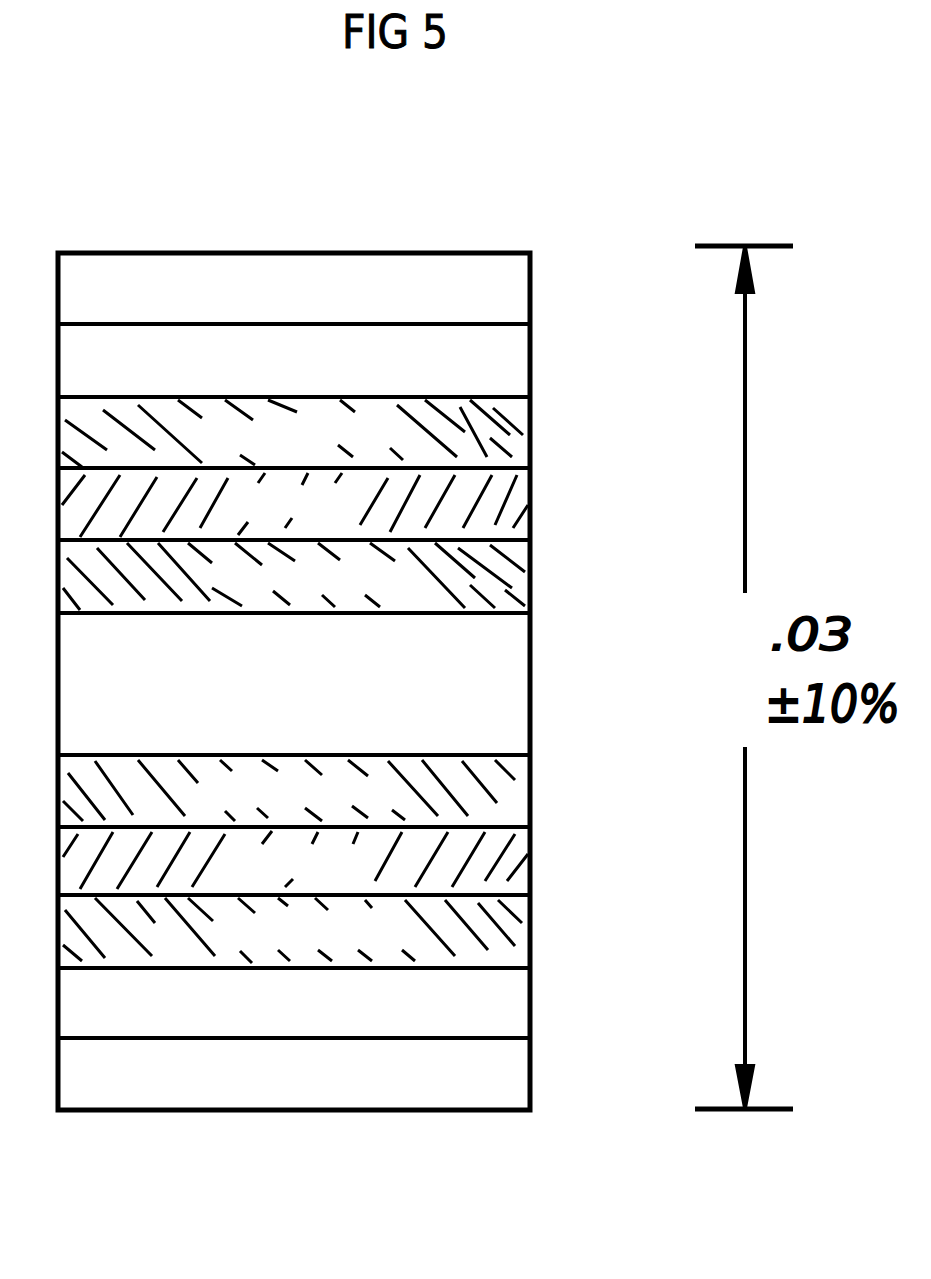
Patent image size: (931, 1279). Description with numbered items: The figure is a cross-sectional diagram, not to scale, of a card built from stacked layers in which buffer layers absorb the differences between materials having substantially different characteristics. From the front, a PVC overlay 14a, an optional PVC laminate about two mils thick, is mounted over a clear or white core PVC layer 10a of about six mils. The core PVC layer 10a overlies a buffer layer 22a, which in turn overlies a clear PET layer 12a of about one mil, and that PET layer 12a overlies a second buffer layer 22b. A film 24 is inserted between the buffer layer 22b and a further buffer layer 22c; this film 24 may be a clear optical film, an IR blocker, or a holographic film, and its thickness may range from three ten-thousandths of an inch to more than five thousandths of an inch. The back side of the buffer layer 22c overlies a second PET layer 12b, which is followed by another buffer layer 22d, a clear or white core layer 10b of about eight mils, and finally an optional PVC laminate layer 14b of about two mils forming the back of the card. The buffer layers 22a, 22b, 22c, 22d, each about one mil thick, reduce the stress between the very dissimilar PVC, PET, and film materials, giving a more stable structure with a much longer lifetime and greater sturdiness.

The PVC overlay 14a is at (533, 289).
The core PVC layer 10a is at (533, 362).
The buffer layer 22a is at (533, 434).
The PET layer 12a is at (533, 507).
The buffer layer 22b is at (533, 581).
The film 24 is at (533, 691).
The buffer layer 22c is at (533, 794).
The PET layer 12b is at (533, 864).
The buffer layer 22d is at (533, 934).
The core layer 10b is at (533, 1006).
The PVC laminate layer 14b is at (533, 1081).